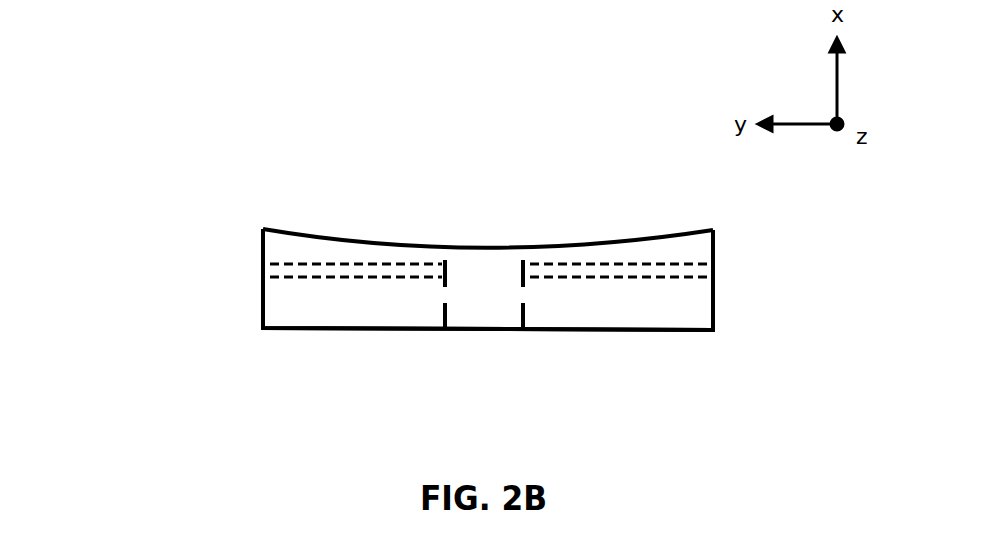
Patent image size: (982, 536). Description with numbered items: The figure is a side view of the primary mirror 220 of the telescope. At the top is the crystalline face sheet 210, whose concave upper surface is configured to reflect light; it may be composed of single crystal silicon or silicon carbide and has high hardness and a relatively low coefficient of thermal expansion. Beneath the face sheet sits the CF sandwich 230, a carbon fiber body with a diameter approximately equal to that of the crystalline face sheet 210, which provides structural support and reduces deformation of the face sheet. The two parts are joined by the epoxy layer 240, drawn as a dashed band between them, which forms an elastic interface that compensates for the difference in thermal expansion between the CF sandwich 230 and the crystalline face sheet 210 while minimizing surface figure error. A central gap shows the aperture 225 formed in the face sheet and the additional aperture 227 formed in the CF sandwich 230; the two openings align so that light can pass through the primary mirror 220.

The primary mirror 220 is at (173, 74).
The crystalline face sheet 210 is at (277, 248).
The epoxy layer 240 is at (278, 272).
The aperture 225 is at (494, 254).
The additional aperture 227 is at (480, 305).
The CF sandwich 230 is at (353, 308).